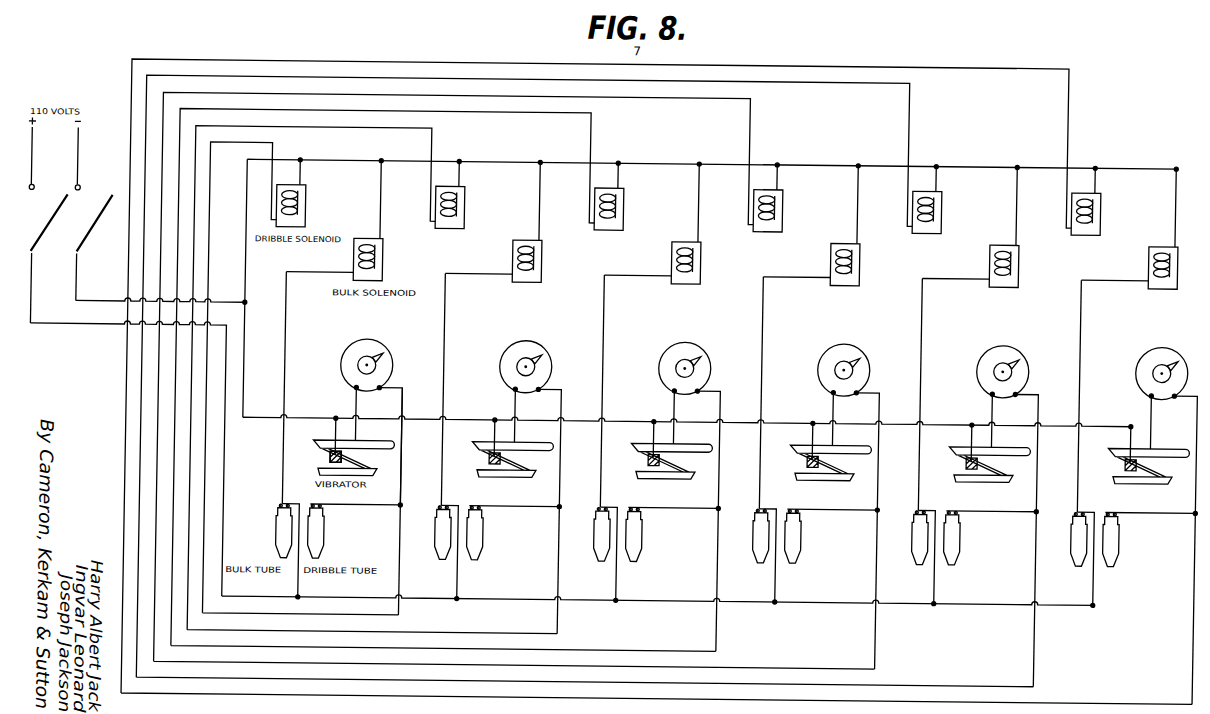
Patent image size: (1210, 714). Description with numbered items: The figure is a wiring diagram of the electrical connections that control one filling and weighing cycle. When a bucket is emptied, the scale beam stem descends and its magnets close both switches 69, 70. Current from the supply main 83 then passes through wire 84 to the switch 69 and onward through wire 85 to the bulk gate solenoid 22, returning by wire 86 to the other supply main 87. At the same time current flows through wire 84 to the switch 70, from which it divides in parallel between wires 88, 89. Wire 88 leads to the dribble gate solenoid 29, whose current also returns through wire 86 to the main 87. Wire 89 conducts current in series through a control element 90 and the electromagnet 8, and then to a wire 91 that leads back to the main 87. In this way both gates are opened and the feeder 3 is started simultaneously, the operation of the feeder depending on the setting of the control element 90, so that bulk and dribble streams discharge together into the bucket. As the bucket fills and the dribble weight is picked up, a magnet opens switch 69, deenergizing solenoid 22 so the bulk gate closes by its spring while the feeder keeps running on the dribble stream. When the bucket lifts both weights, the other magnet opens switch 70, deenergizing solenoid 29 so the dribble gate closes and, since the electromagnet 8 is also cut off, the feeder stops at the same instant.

The feeder 3 is at (354, 446).
The electromagnet 8 is at (335, 455).
The bulk gate solenoid 22 is at (386, 266).
The dribble gate solenoid 29 is at (308, 208).
The switch 69 is at (287, 532).
The switch 70 is at (323, 536).
The supply main 83 is at (95, 324).
The wire 84 is at (310, 593).
The wire 85 is at (291, 376).
The wire 86 is at (336, 161).
The supply main 87 is at (96, 298).
The wire 88 is at (417, 531).
The wire 89 is at (416, 473).
The control element 90 is at (399, 360).
The wire 91 is at (311, 408).